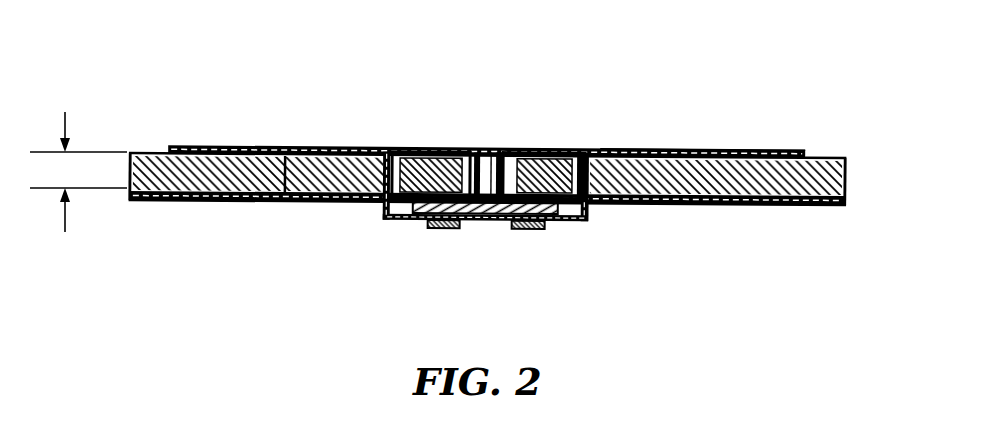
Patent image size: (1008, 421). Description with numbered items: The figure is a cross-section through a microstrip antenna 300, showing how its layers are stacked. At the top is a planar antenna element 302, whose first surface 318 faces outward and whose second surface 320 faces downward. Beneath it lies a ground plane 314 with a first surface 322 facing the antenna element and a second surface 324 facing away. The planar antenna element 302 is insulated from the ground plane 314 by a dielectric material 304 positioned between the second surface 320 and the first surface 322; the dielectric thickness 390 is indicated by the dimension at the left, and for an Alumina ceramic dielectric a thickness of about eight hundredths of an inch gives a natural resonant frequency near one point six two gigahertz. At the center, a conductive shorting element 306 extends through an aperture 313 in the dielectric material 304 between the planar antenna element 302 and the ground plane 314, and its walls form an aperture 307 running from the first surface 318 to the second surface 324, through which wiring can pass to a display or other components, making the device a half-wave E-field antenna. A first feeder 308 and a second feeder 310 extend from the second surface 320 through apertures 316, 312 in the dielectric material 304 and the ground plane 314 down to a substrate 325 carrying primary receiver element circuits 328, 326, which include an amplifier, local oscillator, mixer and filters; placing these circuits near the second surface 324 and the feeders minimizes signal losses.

The microstrip antenna 300 is at (450, 193).
The planar antenna element 302 is at (807, 153).
The dielectric material 304 is at (145, 151).
The conductive shorting element 306 is at (472, 150).
The aperture 307 is at (497, 158).
The first feeder 308 is at (590, 214).
The second feeder 310 is at (385, 215).
The aperture 312 is at (395, 150).
The aperture 313 is at (515, 150).
The ground plane 314 is at (847, 205).
The aperture 316 is at (578, 150).
The first surface 318 is at (235, 145).
The second surface 320 is at (278, 201).
The first surface 322 is at (640, 145).
The second surface 324 is at (682, 205).
The substrate 325 is at (498, 214).
The primary receiver element circuit 326 is at (445, 228).
The primary receiver element circuit 328 is at (537, 228).
The dielectric thickness 390 is at (65, 222).